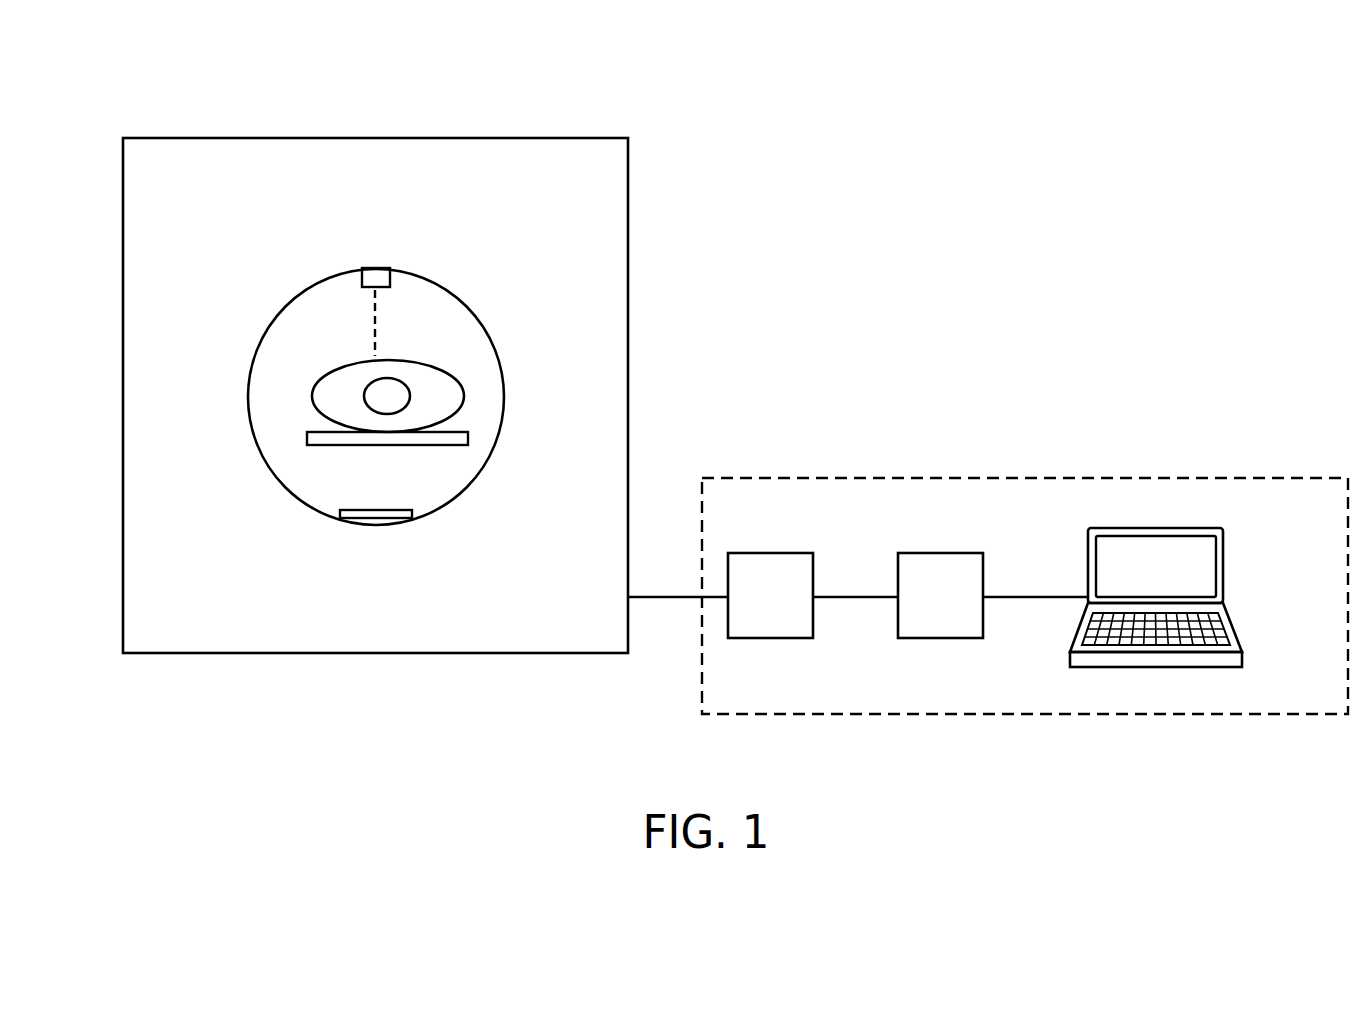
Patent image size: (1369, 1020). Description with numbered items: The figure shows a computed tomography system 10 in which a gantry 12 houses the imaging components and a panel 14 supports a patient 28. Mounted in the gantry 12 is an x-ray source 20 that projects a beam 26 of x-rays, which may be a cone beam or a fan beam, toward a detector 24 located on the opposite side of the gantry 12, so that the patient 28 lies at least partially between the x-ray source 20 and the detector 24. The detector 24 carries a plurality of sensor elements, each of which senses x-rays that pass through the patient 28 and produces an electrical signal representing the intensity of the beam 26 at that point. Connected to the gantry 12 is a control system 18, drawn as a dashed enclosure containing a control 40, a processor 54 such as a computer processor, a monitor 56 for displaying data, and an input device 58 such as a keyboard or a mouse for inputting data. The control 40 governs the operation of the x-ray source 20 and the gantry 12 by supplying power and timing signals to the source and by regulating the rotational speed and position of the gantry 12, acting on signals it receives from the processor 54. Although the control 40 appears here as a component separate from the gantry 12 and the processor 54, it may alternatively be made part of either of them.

The computed tomography system 10 is at (741, 105).
The gantry 12 is at (405, 260).
The panel 14 is at (468, 438).
The control system 18 is at (1035, 478).
The x-ray source 20 is at (390, 287).
The detector 24 is at (358, 508).
The beam 26 is at (375, 341).
The patient 28 is at (463, 395).
The control 40 is at (770, 595).
The processor 54 is at (940, 595).
The monitor 56 is at (1223, 558).
The input device 58 is at (1240, 645).